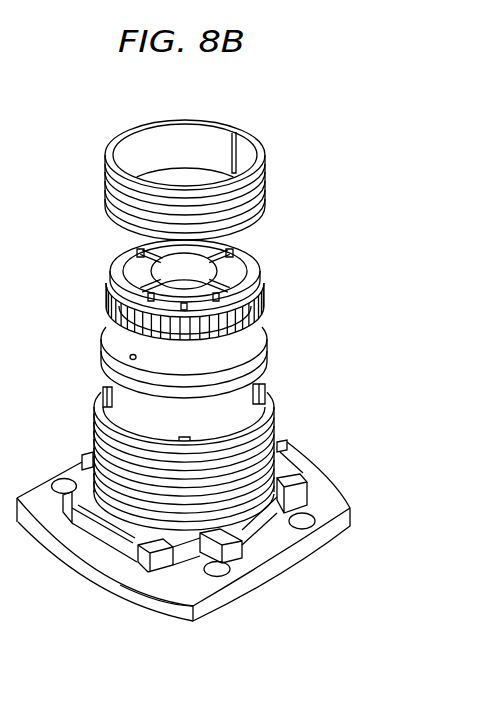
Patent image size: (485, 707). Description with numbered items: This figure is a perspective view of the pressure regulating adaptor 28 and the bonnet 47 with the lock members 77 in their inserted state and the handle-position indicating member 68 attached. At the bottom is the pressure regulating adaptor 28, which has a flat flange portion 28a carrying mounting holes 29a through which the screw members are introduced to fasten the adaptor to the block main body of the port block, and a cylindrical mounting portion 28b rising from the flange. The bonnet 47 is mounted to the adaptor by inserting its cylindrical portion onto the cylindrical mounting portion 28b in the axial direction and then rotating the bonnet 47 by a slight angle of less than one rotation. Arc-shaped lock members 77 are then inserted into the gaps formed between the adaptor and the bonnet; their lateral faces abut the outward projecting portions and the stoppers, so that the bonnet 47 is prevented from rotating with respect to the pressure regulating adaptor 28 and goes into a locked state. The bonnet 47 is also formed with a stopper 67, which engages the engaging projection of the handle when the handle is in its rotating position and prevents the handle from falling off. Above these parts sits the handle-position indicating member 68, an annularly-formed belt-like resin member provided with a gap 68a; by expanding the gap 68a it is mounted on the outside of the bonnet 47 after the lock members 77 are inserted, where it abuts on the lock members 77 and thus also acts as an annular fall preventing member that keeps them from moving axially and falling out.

The handle-position indicating member 68 is at (105, 153).
The gap 68a is at (240, 154).
The bonnet 47 is at (278, 259).
The stopper 67 is at (262, 346).
The lock members 77 is at (102, 390).
The cylindrical mounting portion 28b is at (276, 437).
The pressure regulating adaptor 28 is at (41, 508).
The flange portion 28a is at (188, 583).
The mounting holes 29a is at (307, 529).